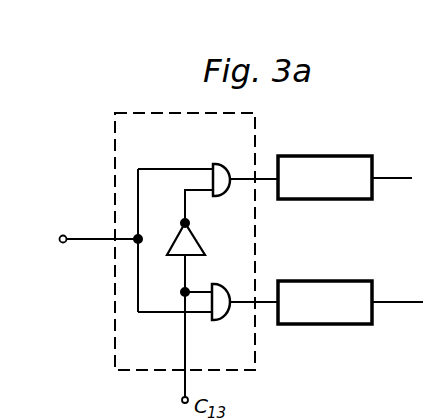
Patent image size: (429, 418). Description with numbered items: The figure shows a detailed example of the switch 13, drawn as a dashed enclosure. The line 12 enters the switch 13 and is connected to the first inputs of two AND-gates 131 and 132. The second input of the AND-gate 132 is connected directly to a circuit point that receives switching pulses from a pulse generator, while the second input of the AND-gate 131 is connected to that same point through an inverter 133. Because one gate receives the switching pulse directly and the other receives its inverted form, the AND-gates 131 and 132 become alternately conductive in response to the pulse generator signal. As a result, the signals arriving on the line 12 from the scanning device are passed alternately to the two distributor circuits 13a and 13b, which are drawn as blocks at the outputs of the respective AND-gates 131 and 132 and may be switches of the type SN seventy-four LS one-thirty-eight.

The line 12 is at (93, 241).
The switch 13 is at (120, 154).
The AND-gate 131 is at (221, 164).
The AND-gate 132 is at (222, 321).
The inverter 133 is at (191, 246).
The distributor circuit 13a is at (328, 168).
The distributor circuit 13b is at (338, 312).